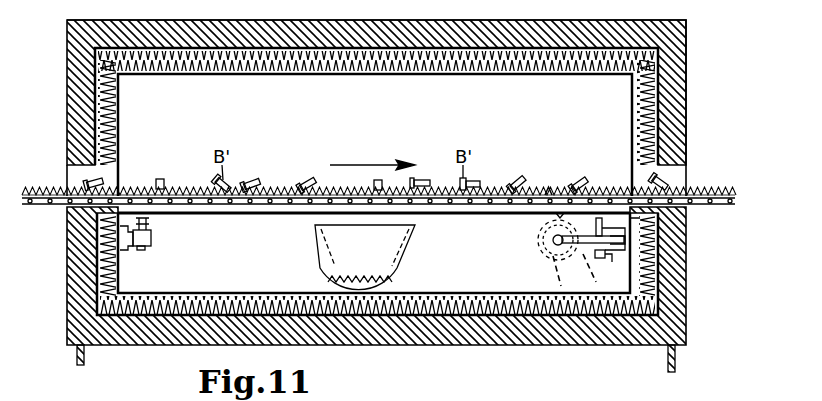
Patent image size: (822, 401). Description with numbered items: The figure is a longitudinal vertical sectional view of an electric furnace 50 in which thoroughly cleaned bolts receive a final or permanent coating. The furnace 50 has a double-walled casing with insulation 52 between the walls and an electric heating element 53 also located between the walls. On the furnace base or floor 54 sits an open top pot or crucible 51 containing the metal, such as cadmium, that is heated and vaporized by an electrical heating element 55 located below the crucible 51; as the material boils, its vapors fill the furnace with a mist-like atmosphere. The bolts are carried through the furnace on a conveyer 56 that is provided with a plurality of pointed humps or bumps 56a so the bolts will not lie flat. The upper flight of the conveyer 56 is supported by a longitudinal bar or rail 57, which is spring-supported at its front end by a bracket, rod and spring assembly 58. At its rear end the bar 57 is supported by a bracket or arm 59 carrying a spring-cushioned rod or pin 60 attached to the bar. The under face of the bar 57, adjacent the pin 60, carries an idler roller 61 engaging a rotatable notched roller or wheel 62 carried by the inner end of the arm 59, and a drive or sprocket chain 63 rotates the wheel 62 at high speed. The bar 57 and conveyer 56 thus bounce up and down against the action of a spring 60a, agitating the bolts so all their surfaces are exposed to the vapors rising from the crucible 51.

The electric furnace 50 is at (688, 98).
The open top pot or crucible 51 is at (367, 249).
The insulation 52 is at (687, 77).
The electric heating element 53 is at (642, 126).
The furnace base or floor 54 is at (302, 293).
The electrical heating element 55 is at (400, 279).
The conveyer 56 is at (289, 205).
The pointed humps or bumps 56a is at (549, 192).
The longitudinal bar or rail 57 is at (241, 204).
The bracket, rod and spring assembly 58 is at (153, 238).
The bracket or arm 59 is at (620, 242).
The spring-cushioned rod or pin 60 is at (640, 218).
The spring 60a is at (610, 258).
The idler roller 61 is at (552, 226).
The rotatable notched roller or wheel 62 is at (552, 244).
The drive or sprocket chain 63 is at (553, 271).